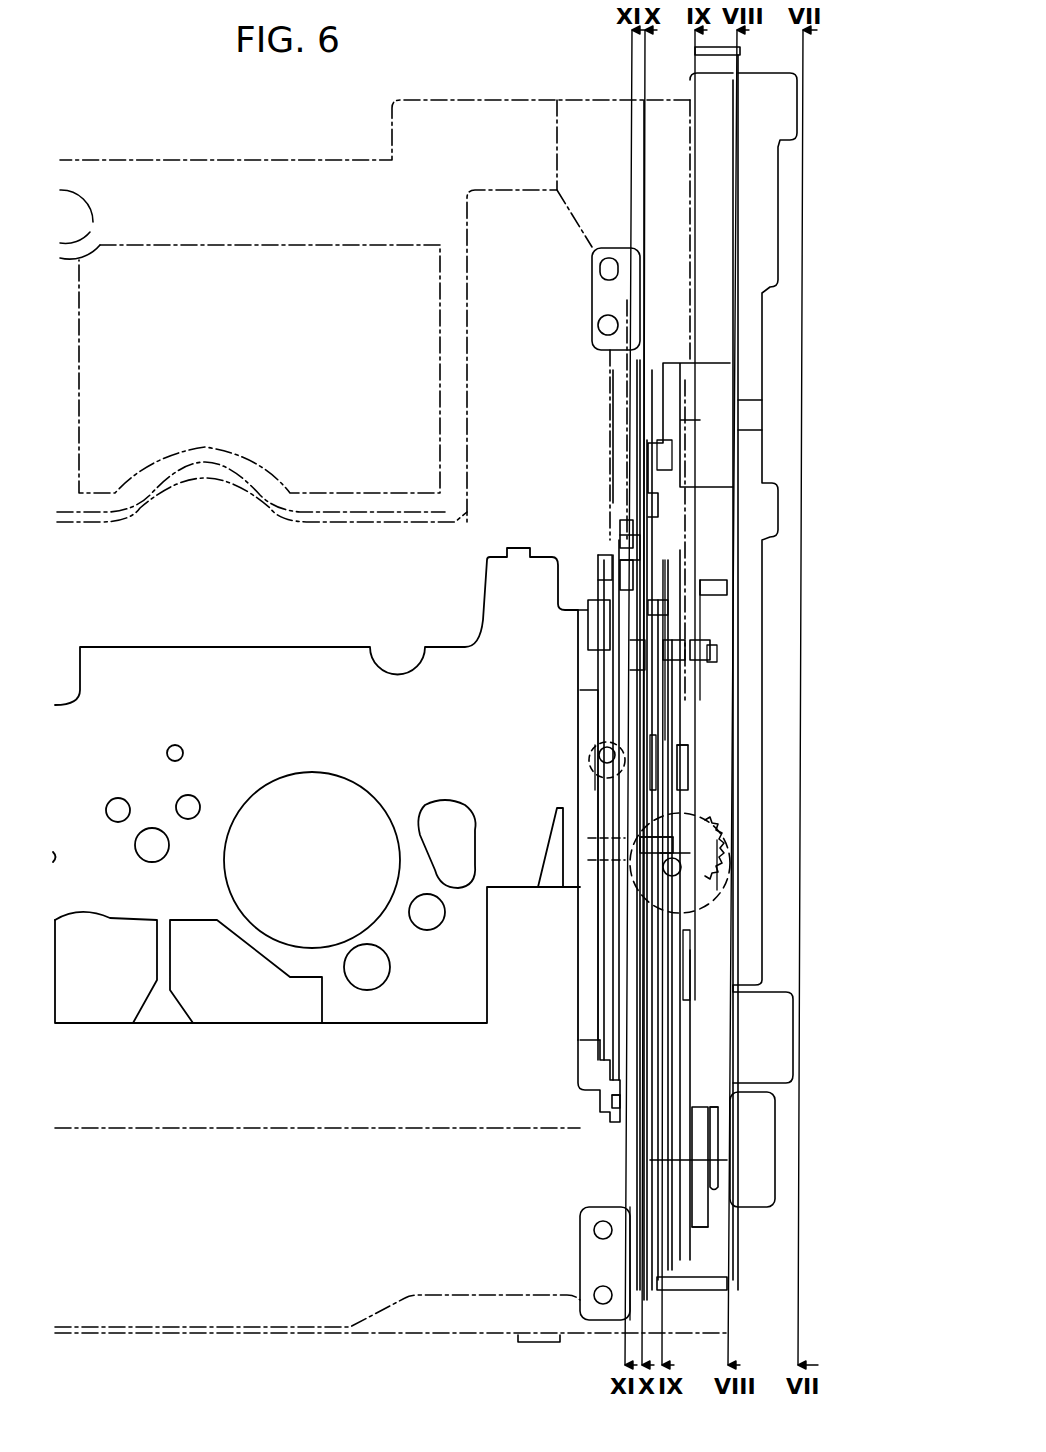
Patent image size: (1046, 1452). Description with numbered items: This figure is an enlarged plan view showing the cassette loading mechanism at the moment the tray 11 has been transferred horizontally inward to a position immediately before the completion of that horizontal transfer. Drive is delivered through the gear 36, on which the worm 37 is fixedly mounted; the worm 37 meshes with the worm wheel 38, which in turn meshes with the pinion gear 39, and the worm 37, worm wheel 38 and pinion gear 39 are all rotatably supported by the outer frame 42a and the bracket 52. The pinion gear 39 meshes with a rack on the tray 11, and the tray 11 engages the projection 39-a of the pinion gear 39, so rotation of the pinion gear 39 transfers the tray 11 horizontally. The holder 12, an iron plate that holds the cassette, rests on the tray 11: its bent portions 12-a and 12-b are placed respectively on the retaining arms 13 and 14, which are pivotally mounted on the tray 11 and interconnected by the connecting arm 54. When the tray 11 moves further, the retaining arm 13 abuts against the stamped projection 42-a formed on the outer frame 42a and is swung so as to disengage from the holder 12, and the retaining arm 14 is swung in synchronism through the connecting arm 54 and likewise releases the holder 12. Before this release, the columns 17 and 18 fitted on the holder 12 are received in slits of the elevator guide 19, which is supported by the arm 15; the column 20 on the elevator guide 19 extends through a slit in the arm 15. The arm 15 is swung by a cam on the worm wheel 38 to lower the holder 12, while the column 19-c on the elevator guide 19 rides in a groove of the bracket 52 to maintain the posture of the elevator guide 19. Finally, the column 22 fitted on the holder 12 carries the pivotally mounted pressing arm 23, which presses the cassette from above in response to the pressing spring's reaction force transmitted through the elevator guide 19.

The tray 11 is at (630, 1202).
The holder 12 is at (588, 703).
The bent portion of the holder 12-a is at (608, 557).
The bent portion of the holder 12-b is at (580, 1043).
The retaining arm 13 is at (623, 548).
The retaining arm 14 is at (615, 1108).
The arm 15 is at (653, 738).
The column 17 is at (650, 817).
The column 18 is at (648, 607).
The elevator guide 19 is at (665, 685).
The column 19-c is at (710, 653).
The column 20 is at (677, 755).
The column 22 is at (593, 752).
The pressing arm 23 is at (557, 827).
The gear 36 is at (717, 860).
The worm 37 is at (693, 853).
The worm wheel 38 is at (683, 962).
The pinion gear 39 is at (700, 1228).
The projection of the pinion gear 39-a is at (713, 1147).
The outer frame 42a is at (740, 412).
The stamped projection 42-a is at (657, 460).
The bracket 52 is at (700, 603).
The connecting arm 54 is at (638, 655).